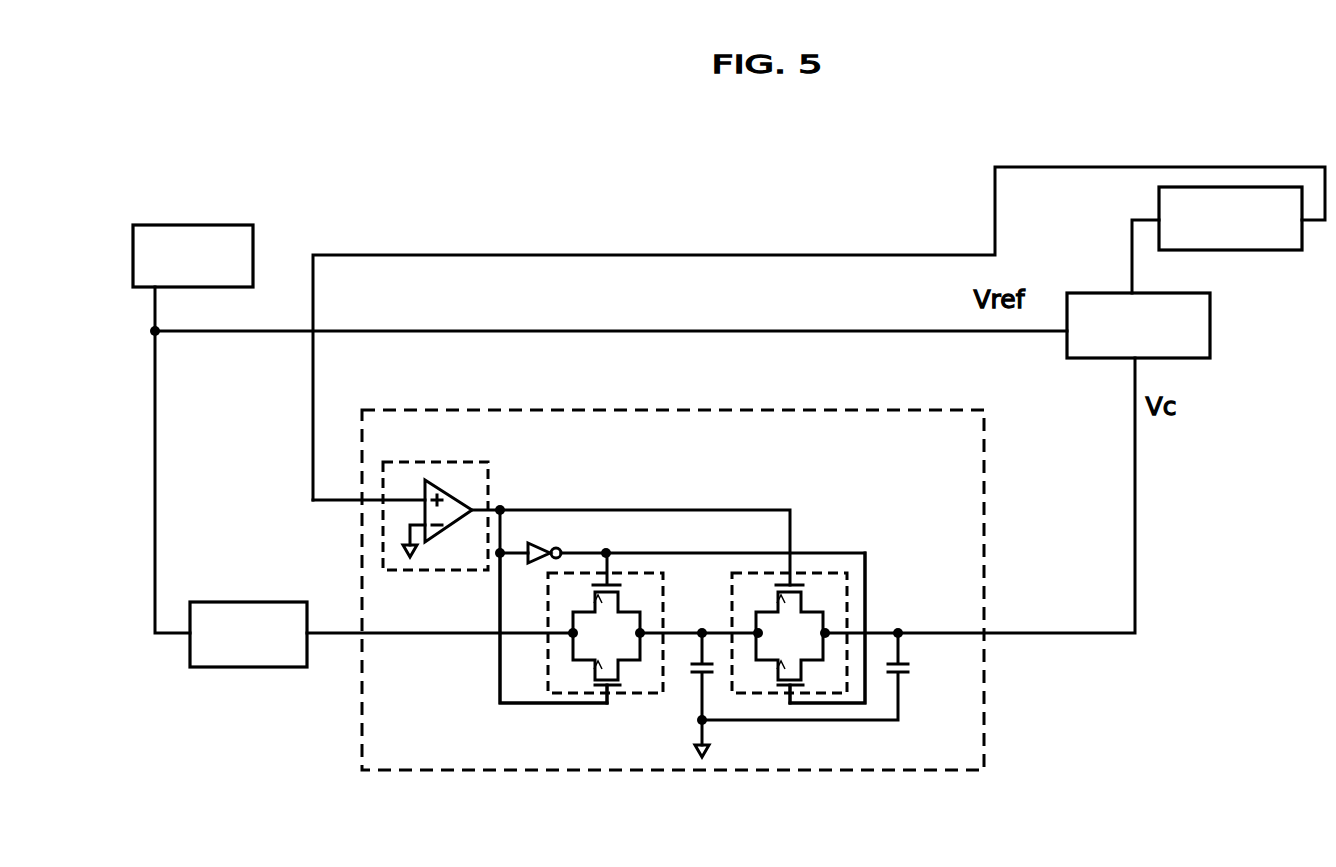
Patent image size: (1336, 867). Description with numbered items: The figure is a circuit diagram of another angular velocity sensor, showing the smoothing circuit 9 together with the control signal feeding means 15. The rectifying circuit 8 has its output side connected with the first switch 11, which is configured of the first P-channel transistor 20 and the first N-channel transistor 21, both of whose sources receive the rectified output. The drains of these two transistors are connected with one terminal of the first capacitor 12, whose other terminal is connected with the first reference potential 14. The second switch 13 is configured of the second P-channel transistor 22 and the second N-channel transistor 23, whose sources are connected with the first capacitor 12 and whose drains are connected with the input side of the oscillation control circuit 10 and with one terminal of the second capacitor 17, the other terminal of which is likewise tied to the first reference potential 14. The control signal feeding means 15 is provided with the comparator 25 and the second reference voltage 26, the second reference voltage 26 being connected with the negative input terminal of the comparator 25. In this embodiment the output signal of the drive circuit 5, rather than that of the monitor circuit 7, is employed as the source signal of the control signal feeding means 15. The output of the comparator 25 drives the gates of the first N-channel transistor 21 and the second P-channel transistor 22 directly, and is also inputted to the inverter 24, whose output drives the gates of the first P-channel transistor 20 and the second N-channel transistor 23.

The drive circuit 5 is at (1272, 252).
The monitor circuit 7 is at (227, 225).
The rectifying circuit 8 is at (243, 667).
The smoothing circuit 9 is at (955, 410).
The oscillation control circuit 10 is at (1090, 292).
The first switch 11 is at (550, 655).
The first capacitor 12 is at (693, 672).
The second switch 13 is at (845, 615).
The first reference potential 14 is at (707, 757).
The control signal feeding means 15 is at (400, 460).
The second capacitor 17 is at (908, 663).
The first P-channel transistor 20 is at (613, 582).
The first N-channel transistor 21 is at (593, 680).
The second P-channel transistor 22 is at (800, 583).
The second N-channel transistor 23 is at (803, 682).
The inverter 24 is at (543, 542).
The comparator 25 is at (458, 490).
The second reference voltage 26 is at (403, 545).